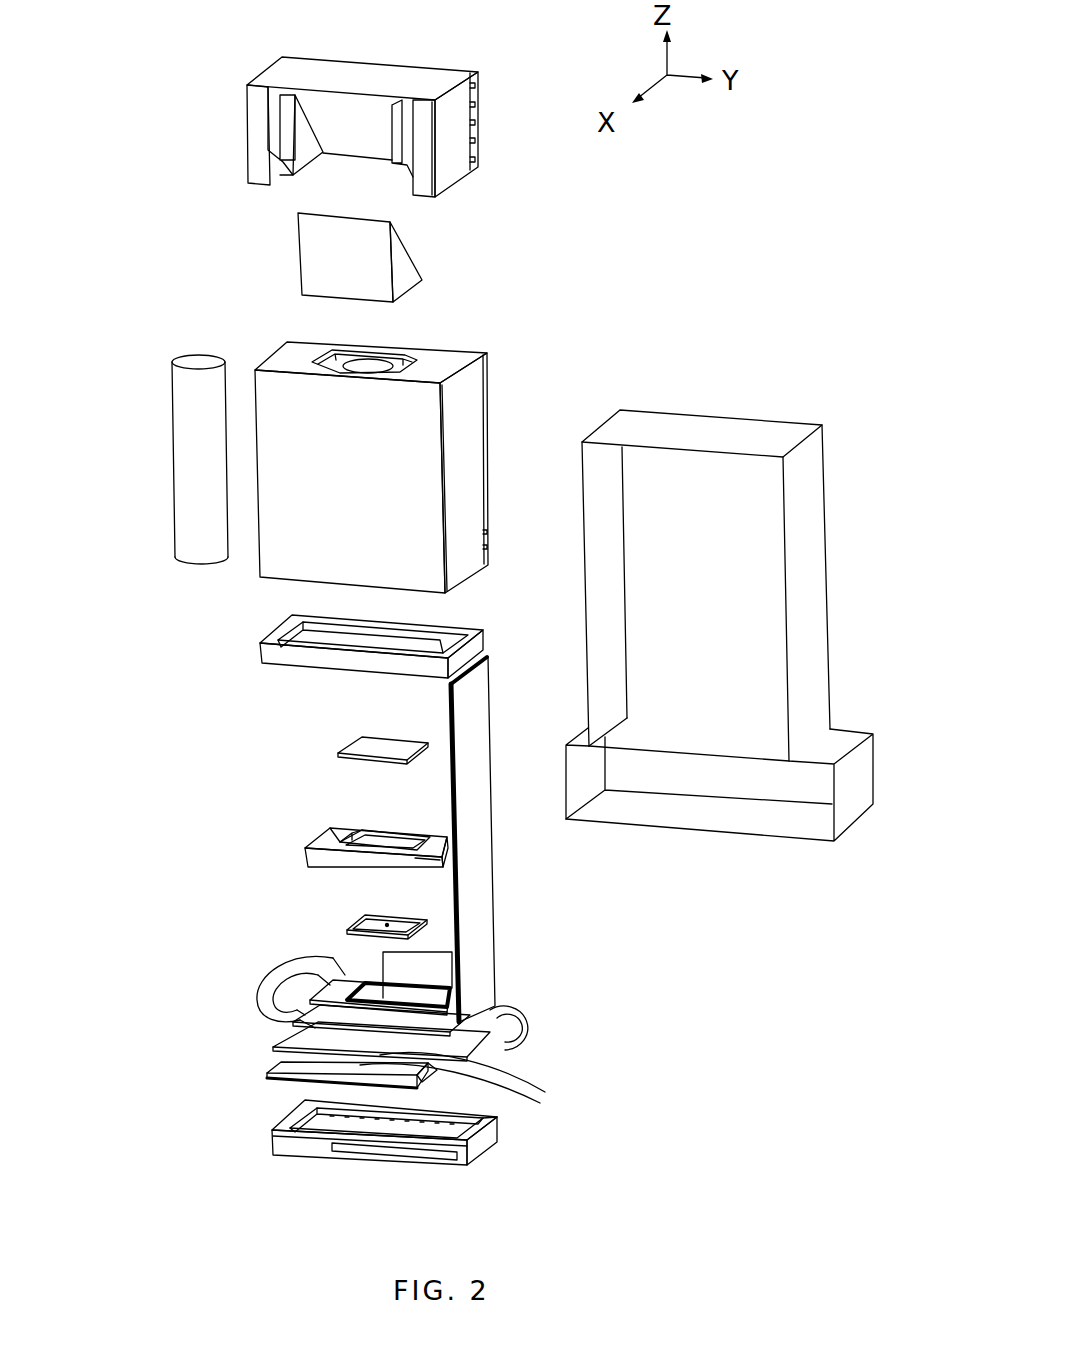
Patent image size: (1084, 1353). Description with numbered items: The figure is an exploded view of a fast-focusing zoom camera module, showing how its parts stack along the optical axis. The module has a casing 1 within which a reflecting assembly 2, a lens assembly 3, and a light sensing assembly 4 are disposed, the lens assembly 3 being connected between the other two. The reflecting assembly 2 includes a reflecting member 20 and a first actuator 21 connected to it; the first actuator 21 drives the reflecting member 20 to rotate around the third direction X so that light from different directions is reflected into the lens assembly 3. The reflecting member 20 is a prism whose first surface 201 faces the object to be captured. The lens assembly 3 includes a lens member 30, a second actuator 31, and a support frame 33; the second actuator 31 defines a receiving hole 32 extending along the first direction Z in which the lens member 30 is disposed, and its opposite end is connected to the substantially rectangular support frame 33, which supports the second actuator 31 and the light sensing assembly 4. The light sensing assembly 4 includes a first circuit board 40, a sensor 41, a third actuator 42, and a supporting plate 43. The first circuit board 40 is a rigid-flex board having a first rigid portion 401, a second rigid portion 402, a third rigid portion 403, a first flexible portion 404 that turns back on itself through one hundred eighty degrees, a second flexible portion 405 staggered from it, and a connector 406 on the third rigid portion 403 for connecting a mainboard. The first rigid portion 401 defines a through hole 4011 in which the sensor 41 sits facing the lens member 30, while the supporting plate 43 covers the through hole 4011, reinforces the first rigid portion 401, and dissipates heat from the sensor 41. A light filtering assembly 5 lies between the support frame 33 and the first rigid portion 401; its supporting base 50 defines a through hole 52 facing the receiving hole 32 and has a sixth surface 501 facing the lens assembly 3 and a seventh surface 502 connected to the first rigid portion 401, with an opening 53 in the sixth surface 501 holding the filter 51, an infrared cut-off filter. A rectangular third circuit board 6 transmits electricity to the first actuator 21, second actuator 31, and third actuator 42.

The casing 1 is at (846, 568).
The reflecting assembly 2 is at (224, 117).
The reflecting member 20 is at (277, 255).
The first surface 201 is at (373, 253).
The first actuator 21 is at (300, 67).
The lens assembly 3 is at (509, 404).
The lens member 30 is at (188, 395).
The second actuator 31 is at (272, 352).
The receiving hole 32 is at (373, 362).
The support frame 33 is at (277, 632).
The light sensing assembly 4 is at (180, 1021).
The first circuit board 40 is at (252, 987).
The first rigid portion 401 is at (330, 982).
The through hole 4011 is at (360, 982).
The second rigid portion 402 is at (497, 1037).
The third rigid portion 403 is at (497, 1122).
The first flexible portion 404 is at (522, 1015).
The second flexible portion 405 is at (430, 1073).
The connector 406 is at (303, 1058).
The sensor 41 is at (358, 920).
The third actuator 42 is at (287, 1145).
The supporting plate 43 is at (340, 1015).
The light filtering assembly 5 is at (249, 813).
The supporting base 50 is at (325, 857).
The sixth surface 501 is at (440, 843).
The seventh surface 502 is at (436, 876).
The filter 51 is at (370, 745).
The through hole 52 is at (340, 836).
The opening 53 is at (330, 833).
The third circuit board 6 is at (480, 910).